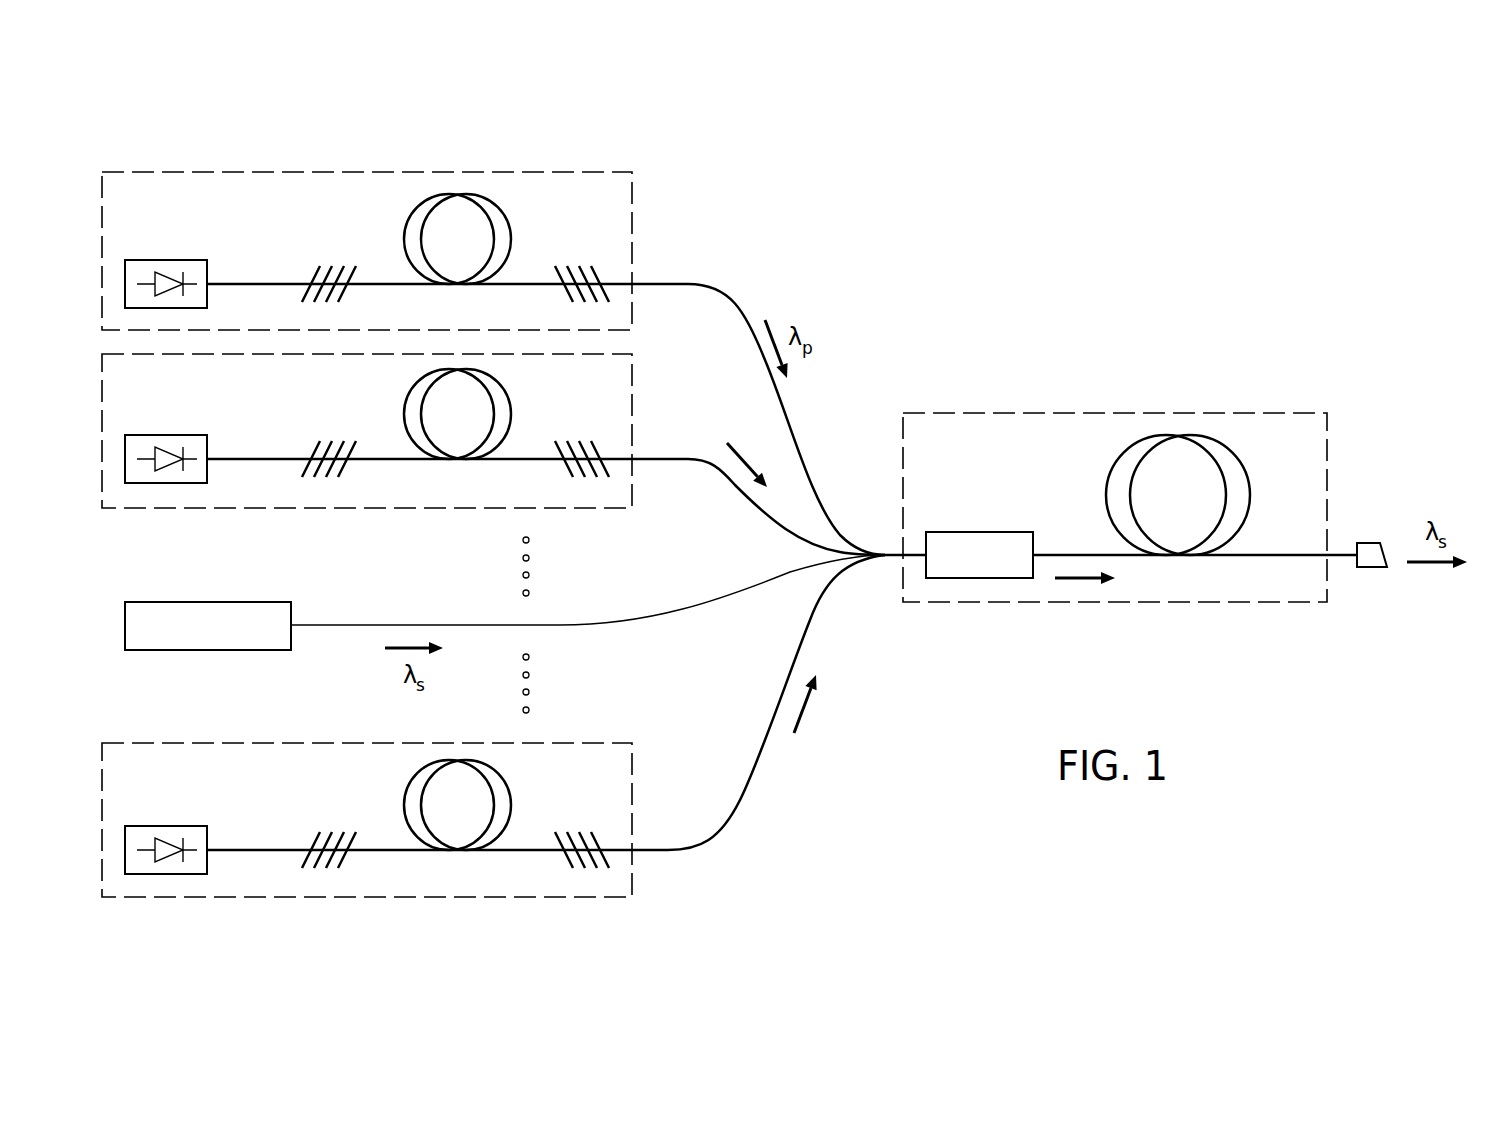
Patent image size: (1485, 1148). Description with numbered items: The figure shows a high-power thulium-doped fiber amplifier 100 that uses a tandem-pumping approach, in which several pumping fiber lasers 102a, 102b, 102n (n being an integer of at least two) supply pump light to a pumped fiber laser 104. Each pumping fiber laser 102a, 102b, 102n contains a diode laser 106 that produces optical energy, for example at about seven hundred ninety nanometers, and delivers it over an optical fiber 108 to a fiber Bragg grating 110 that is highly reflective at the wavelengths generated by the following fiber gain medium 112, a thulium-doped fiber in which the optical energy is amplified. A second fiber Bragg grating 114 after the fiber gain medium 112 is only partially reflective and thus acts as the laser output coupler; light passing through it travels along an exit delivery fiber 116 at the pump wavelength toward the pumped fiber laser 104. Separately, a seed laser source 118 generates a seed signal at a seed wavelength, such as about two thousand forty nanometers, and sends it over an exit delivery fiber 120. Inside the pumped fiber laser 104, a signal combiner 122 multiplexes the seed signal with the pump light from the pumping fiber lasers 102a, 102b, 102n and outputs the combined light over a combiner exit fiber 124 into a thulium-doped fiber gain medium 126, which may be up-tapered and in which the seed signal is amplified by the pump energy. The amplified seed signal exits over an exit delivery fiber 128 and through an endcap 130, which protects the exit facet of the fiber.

The high-power thulium-doped fiber amplifier 100 is at (1012, 152).
The pumping fiber laser 102a is at (362, 162).
The pumping fiber laser 102b is at (367, 467).
The pumping fiber laser 102n is at (335, 732).
The pumped fiber laser 104 is at (1132, 400).
The diode laser 106 is at (172, 434).
The optical fiber 108 is at (255, 457).
The fiber Bragg grating 110 is at (345, 470).
The fiber gain medium 112 is at (404, 457).
The fiber Bragg grating 114 is at (565, 472).
The exit delivery fiber 116 is at (725, 481).
The seed laser source 118 is at (207, 651).
The exit delivery fiber 120 is at (681, 602).
The signal combiner 122 is at (978, 530).
The combiner exit fiber 124 is at (1088, 552).
The fiber gain medium 126 is at (1177, 555).
The exit delivery fiber 128 is at (1275, 552).
The endcap 130 is at (1370, 570).